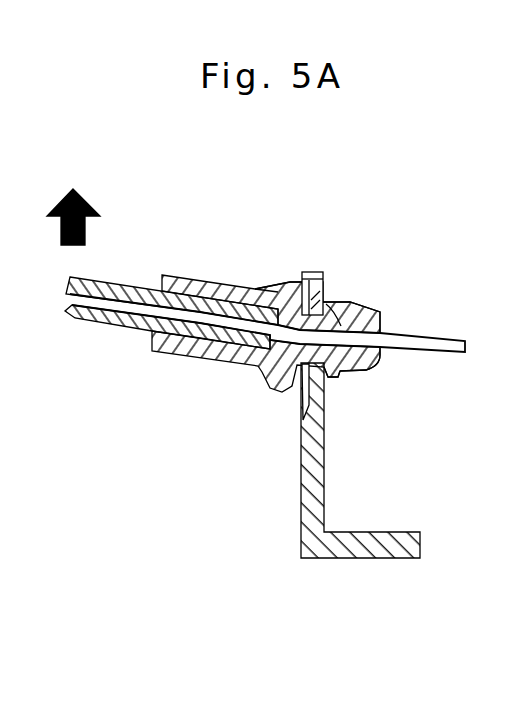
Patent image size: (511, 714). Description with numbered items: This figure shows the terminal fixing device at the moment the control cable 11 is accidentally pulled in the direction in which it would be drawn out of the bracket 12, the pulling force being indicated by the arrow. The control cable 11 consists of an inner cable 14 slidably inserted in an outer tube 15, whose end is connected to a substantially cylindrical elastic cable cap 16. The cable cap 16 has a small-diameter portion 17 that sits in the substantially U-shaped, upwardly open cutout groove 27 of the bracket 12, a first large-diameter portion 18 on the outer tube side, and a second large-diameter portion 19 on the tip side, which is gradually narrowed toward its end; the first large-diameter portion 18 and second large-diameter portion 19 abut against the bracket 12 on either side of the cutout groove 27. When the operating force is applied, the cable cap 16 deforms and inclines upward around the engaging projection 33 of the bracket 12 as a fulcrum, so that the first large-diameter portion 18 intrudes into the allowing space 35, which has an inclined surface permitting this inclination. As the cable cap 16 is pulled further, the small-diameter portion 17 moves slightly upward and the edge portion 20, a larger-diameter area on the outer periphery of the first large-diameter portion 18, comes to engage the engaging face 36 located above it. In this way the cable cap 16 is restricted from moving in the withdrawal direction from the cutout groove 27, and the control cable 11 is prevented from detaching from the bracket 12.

The control cable 11 is at (82, 320).
The bracket 12 is at (308, 487).
The inner cable 14 is at (421, 338).
The outer tube 15 is at (127, 322).
The cable cap 16 is at (182, 358).
The small-diameter portion 17 is at (338, 302).
The first large-diameter portion 18 is at (290, 297).
The second large-diameter portion 19 is at (363, 366).
The edge portion 20 is at (315, 272).
The cutout groove 27 is at (334, 373).
The engaging projection 33 is at (328, 300).
The allowing space 35 is at (322, 286).
The engaging face 36 is at (297, 288).